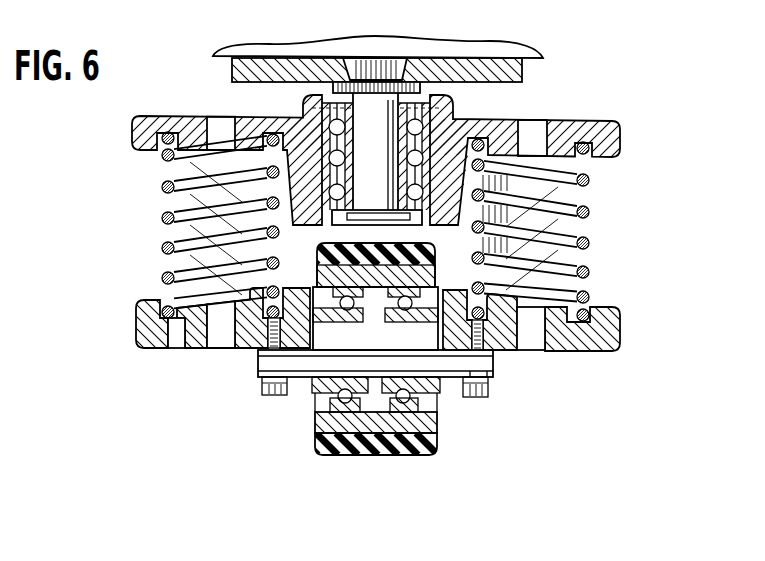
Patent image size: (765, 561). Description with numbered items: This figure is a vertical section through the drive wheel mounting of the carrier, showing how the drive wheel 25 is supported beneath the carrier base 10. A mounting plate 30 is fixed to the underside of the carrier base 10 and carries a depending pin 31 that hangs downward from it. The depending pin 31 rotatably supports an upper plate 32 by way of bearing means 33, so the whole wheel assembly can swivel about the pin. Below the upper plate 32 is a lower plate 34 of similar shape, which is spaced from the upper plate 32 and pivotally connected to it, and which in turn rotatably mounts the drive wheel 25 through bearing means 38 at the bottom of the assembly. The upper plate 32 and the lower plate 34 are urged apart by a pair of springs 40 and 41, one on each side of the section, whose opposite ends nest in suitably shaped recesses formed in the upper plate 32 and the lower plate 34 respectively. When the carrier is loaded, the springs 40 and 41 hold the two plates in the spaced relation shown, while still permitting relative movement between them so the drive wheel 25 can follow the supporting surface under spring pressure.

The carrier base 10 is at (513, 53).
The mounting plate 30 is at (525, 73).
The depending pin 31 is at (383, 140).
The upper plate 32 is at (613, 123).
The bearing means 33 is at (310, 113).
The spring 40 is at (157, 219).
The spring 41 is at (592, 243).
The lower plate 34 is at (607, 322).
The bearing means 38 is at (312, 380).
The drive wheel 25 is at (432, 440).